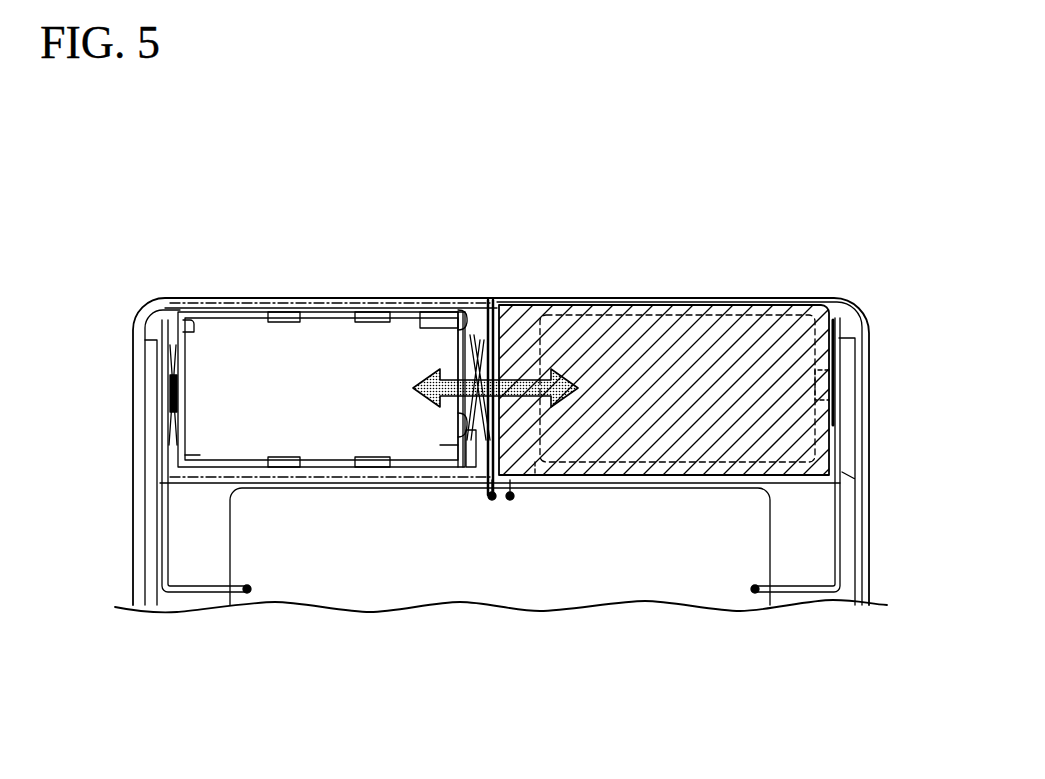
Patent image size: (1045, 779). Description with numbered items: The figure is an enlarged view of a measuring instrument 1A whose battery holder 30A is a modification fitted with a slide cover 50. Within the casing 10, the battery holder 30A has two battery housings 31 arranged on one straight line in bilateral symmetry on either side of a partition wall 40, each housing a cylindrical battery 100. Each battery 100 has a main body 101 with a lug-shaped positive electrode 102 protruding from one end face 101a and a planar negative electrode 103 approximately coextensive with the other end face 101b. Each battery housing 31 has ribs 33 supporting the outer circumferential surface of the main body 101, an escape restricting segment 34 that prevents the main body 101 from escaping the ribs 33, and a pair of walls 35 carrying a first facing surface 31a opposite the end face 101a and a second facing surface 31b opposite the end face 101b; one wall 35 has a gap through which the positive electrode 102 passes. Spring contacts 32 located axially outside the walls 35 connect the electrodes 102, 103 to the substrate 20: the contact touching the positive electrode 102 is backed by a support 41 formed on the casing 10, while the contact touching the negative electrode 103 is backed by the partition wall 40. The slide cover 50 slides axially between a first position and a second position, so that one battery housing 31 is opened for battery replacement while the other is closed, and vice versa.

The measuring instrument 1A is at (470, 216).
The casing 10 is at (133, 337).
The substrate 20 is at (533, 600).
The battery holder 30A is at (385, 276).
The battery housing 31 is at (645, 306).
The first facing surface 31a is at (186, 320).
The second facing surface 31b is at (460, 318).
The spring contact 32 is at (470, 350).
The rib 33 is at (336, 465).
The escape restricting segment 34 is at (420, 312).
The wall 35 is at (160, 302).
The partition wall 40 is at (500, 497).
The support 41 is at (140, 322).
The slide cover 50 is at (543, 300).
The battery 100 is at (318, 335).
The main body 101 is at (345, 312).
The one end face 101a is at (207, 460).
The other end face 101b is at (445, 440).
The positive electrode 102 is at (168, 397).
The negative electrode 103 is at (468, 462).